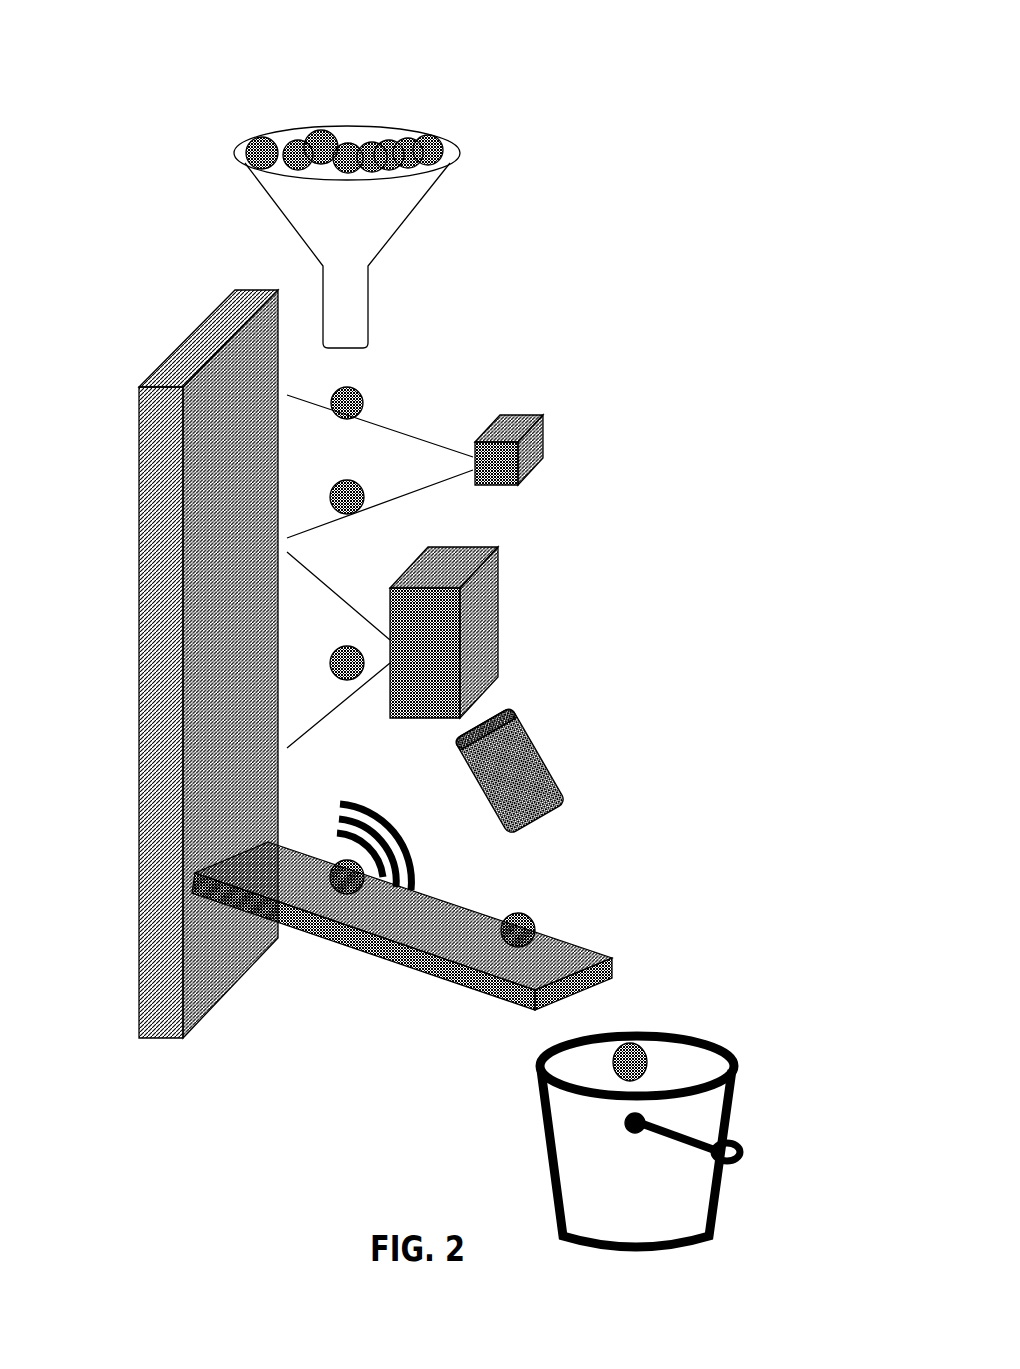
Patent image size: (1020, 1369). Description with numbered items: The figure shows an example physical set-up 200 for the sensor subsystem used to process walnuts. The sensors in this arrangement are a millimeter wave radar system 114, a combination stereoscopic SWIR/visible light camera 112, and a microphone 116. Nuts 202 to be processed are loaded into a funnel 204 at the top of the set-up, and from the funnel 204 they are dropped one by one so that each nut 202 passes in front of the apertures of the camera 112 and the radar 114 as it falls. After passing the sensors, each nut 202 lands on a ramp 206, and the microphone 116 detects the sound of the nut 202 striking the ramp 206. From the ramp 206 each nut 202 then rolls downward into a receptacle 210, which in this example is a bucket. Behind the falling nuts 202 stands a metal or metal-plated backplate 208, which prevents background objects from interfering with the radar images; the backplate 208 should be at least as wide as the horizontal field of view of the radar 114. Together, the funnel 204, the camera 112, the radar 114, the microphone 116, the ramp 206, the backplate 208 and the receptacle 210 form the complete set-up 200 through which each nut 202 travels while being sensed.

The physical set-up 200 is at (525, 56).
The nuts 202 is at (437, 133).
The funnel 204 is at (412, 225).
The ramp 206 is at (583, 948).
The backplate 208 is at (140, 560).
The receptacle 210 is at (737, 1108).
The camera 112 is at (547, 440).
The millimeter wave radar system 114 is at (500, 633).
The microphone 116 is at (555, 778).